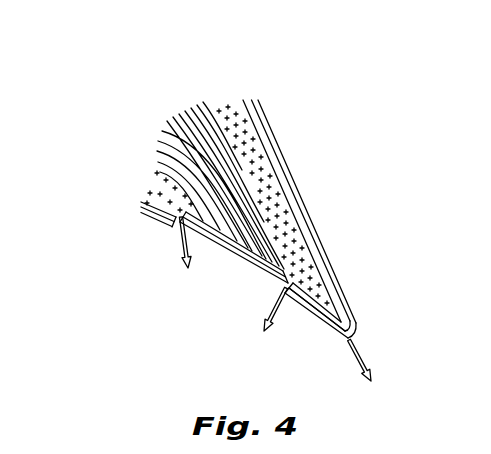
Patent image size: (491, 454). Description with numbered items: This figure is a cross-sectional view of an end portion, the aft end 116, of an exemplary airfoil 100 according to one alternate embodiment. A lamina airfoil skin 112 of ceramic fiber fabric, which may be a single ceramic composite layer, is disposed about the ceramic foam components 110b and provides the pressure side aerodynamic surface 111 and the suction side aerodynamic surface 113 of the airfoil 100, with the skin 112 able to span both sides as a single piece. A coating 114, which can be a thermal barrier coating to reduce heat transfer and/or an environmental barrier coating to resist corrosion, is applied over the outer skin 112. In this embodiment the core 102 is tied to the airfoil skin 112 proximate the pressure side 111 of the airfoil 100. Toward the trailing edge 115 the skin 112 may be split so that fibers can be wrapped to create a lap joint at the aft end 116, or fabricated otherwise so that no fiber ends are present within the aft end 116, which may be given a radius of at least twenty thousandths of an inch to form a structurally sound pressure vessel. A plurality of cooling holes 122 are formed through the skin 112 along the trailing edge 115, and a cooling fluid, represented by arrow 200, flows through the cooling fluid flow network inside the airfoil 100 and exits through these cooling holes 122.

The airfoil 100 is at (93, 260).
The core 102 is at (170, 119).
The ceramic foam components 110b is at (279, 215).
The pressure side aerodynamic surface 111 is at (181, 306).
The lamina airfoil skin 112 is at (270, 177).
The suction side aerodynamic surface 113 is at (368, 170).
The coating 114 is at (278, 143).
The trailing edge 115 is at (345, 338).
The aft end 116 is at (360, 328).
The cooling holes 122 is at (189, 226).
The cooling fluid 200 is at (183, 247).